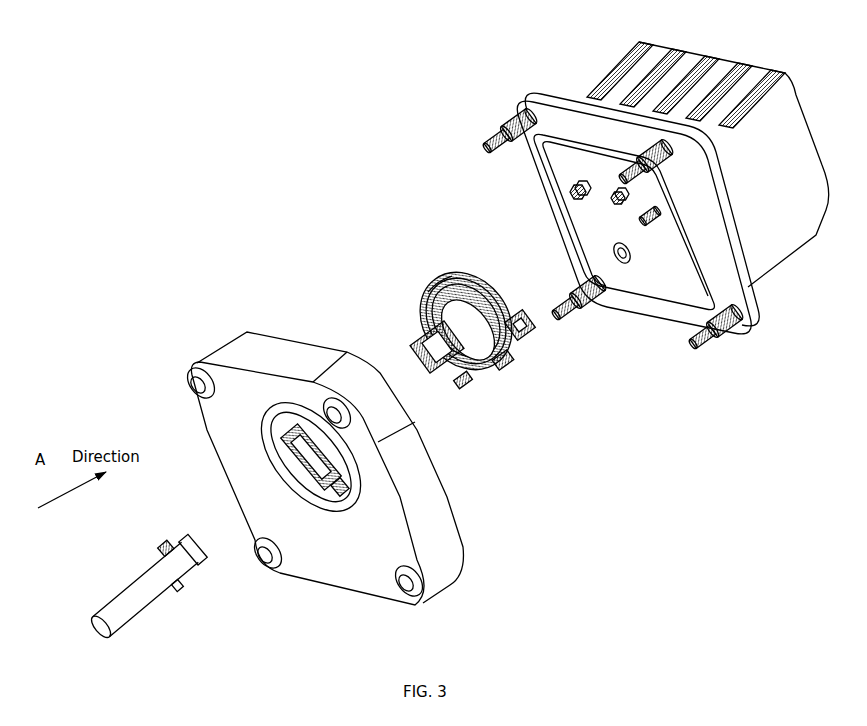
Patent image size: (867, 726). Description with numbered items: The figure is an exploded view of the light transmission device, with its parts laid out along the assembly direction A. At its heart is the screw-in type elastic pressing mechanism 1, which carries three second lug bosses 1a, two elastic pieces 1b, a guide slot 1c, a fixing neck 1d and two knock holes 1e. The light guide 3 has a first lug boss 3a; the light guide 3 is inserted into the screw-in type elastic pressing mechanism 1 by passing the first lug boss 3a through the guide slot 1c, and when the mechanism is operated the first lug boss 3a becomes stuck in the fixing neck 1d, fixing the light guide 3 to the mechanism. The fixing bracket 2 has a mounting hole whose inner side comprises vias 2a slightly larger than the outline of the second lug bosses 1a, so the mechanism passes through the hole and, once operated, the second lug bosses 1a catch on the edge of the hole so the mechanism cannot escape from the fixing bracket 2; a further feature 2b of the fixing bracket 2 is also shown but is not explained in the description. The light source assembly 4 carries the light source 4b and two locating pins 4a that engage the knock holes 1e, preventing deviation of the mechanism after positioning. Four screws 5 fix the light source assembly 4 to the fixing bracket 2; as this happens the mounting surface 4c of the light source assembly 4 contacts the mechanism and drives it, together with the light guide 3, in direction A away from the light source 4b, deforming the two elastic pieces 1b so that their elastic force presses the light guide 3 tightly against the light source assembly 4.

The screw-in type elastic pressing mechanism 1 is at (453, 313).
The second lug boss 1a is at (472, 388).
The elastic piece 1b is at (510, 364).
The guide slot 1c is at (425, 332).
The fixing neck 1d is at (438, 302).
The knock hole 1e is at (512, 325).
The fixing bracket 2 is at (325, 443).
The via 2a is at (272, 442).
The recess 2b is at (350, 489).
The light guide 3 is at (149, 569).
The first lug boss 3a is at (165, 547).
The light source assembly 4 is at (786, 266).
The locating pin 4a is at (658, 222).
The light source 4b is at (621, 210).
The mounting surface 4c is at (656, 238).
The screw 5 is at (493, 127).